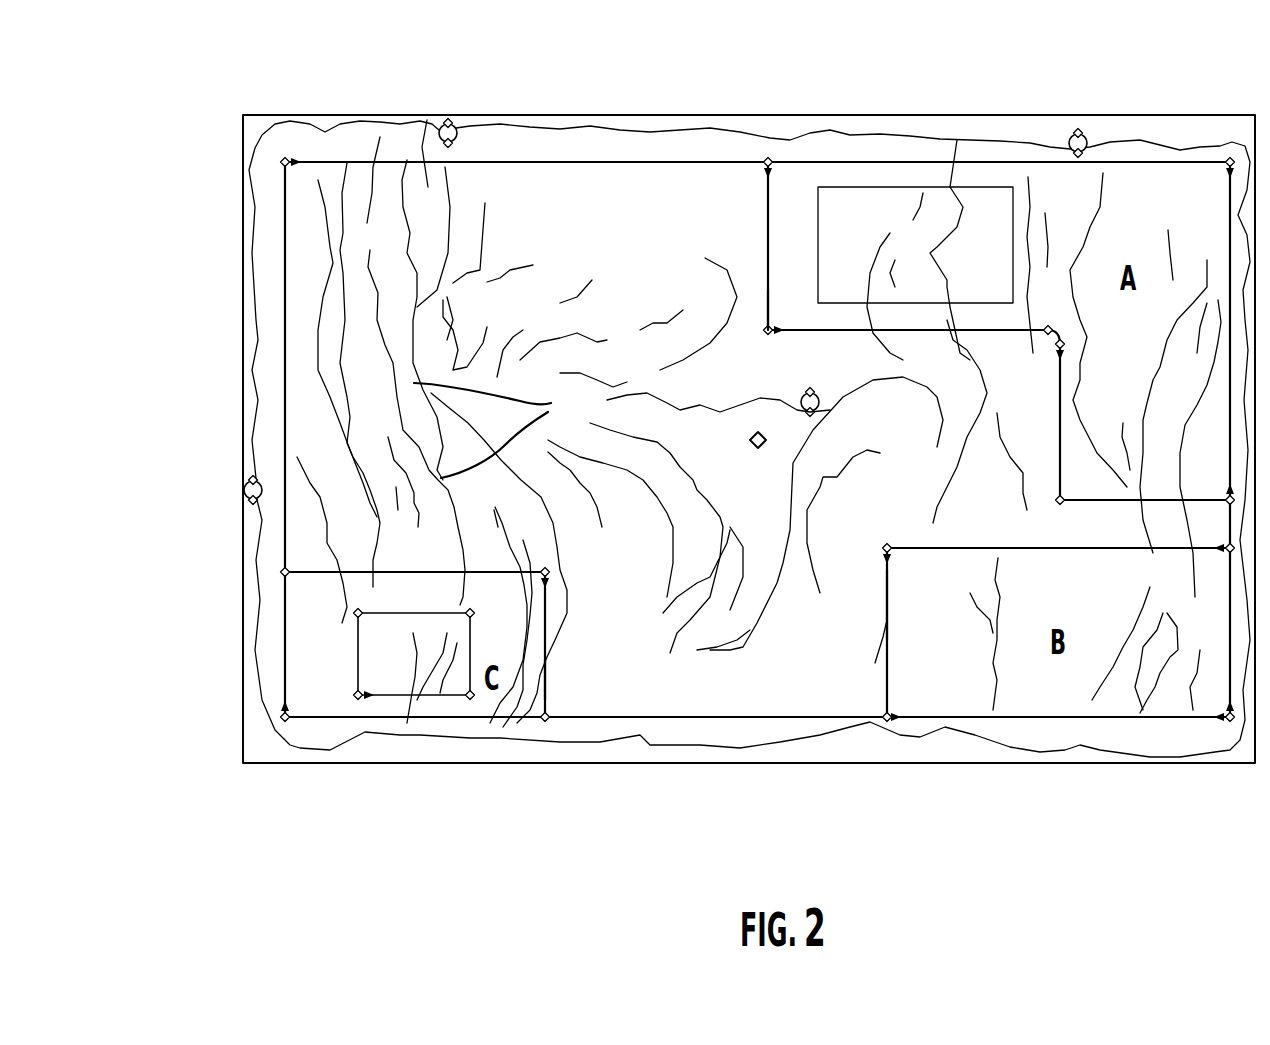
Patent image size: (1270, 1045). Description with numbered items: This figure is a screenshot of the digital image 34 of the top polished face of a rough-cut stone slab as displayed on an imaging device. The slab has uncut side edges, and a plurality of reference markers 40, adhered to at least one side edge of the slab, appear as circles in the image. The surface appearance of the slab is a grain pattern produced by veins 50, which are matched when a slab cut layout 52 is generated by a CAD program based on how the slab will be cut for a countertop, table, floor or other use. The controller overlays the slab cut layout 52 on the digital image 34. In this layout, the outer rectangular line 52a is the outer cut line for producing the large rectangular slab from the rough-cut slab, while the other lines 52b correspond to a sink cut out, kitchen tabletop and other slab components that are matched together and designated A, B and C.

The digital image 34 is at (609, 114).
The reference markers 40 is at (456, 128).
The veins 50 is at (532, 355).
The slab cut layout 52 is at (603, 176).
The outer rectangular line 52a is at (830, 160).
The other lines 52b is at (766, 296).